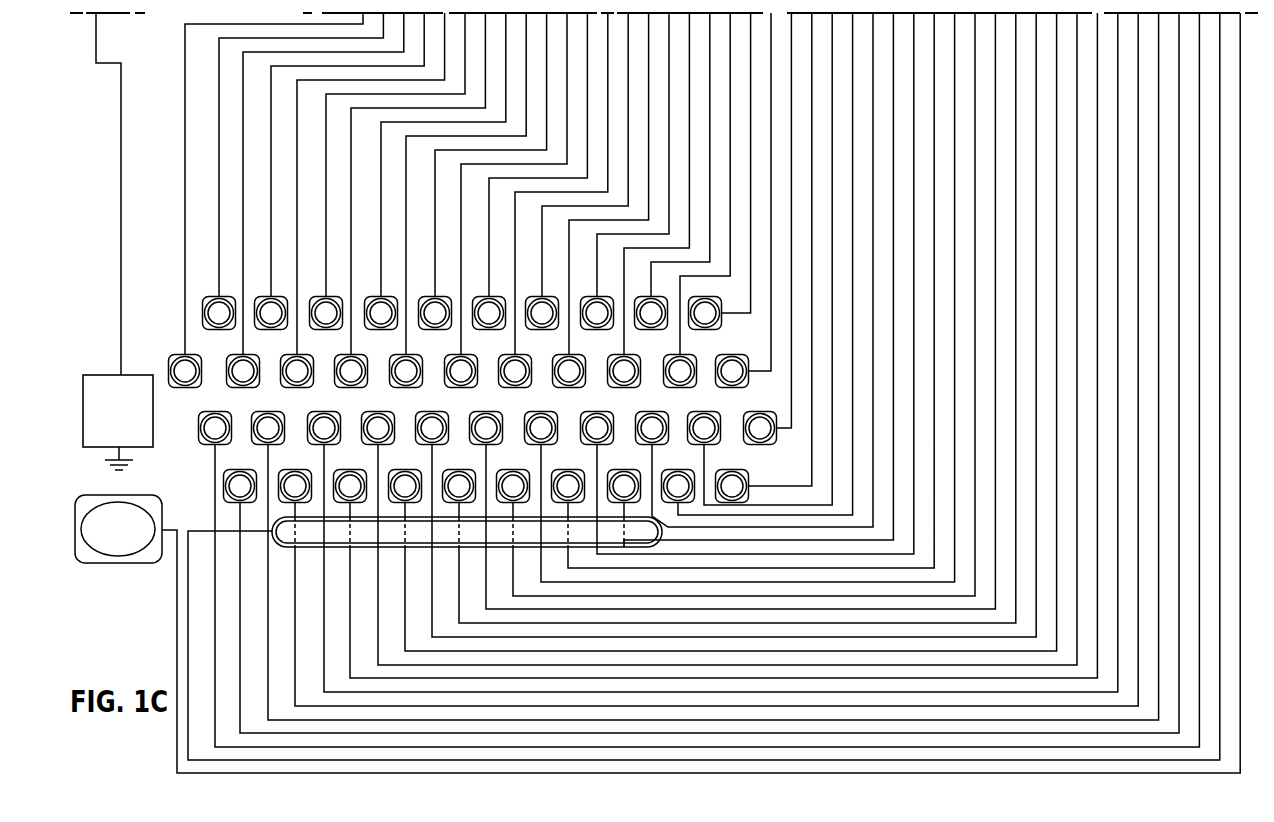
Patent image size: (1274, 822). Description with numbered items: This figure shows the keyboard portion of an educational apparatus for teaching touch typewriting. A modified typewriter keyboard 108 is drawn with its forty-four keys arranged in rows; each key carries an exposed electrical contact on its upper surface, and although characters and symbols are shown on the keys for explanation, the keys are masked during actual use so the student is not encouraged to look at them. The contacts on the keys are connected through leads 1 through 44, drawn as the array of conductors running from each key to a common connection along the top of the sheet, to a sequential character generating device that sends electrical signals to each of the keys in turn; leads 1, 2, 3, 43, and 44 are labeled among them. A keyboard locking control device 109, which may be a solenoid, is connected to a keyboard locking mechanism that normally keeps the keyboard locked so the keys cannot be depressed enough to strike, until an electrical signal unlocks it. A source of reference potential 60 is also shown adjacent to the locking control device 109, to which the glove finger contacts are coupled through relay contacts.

The lead 1 is at (363, 24).
The lead 2 is at (383, 24).
The lead 3 is at (404, 24).
The lead 43 is at (1219, 39).
The lead 44 is at (1238, 39).
The source of reference potential 60 is at (108, 462).
The modified typewriter keyboard 108 is at (169, 325).
The keyboard locking control device 109 is at (153, 440).